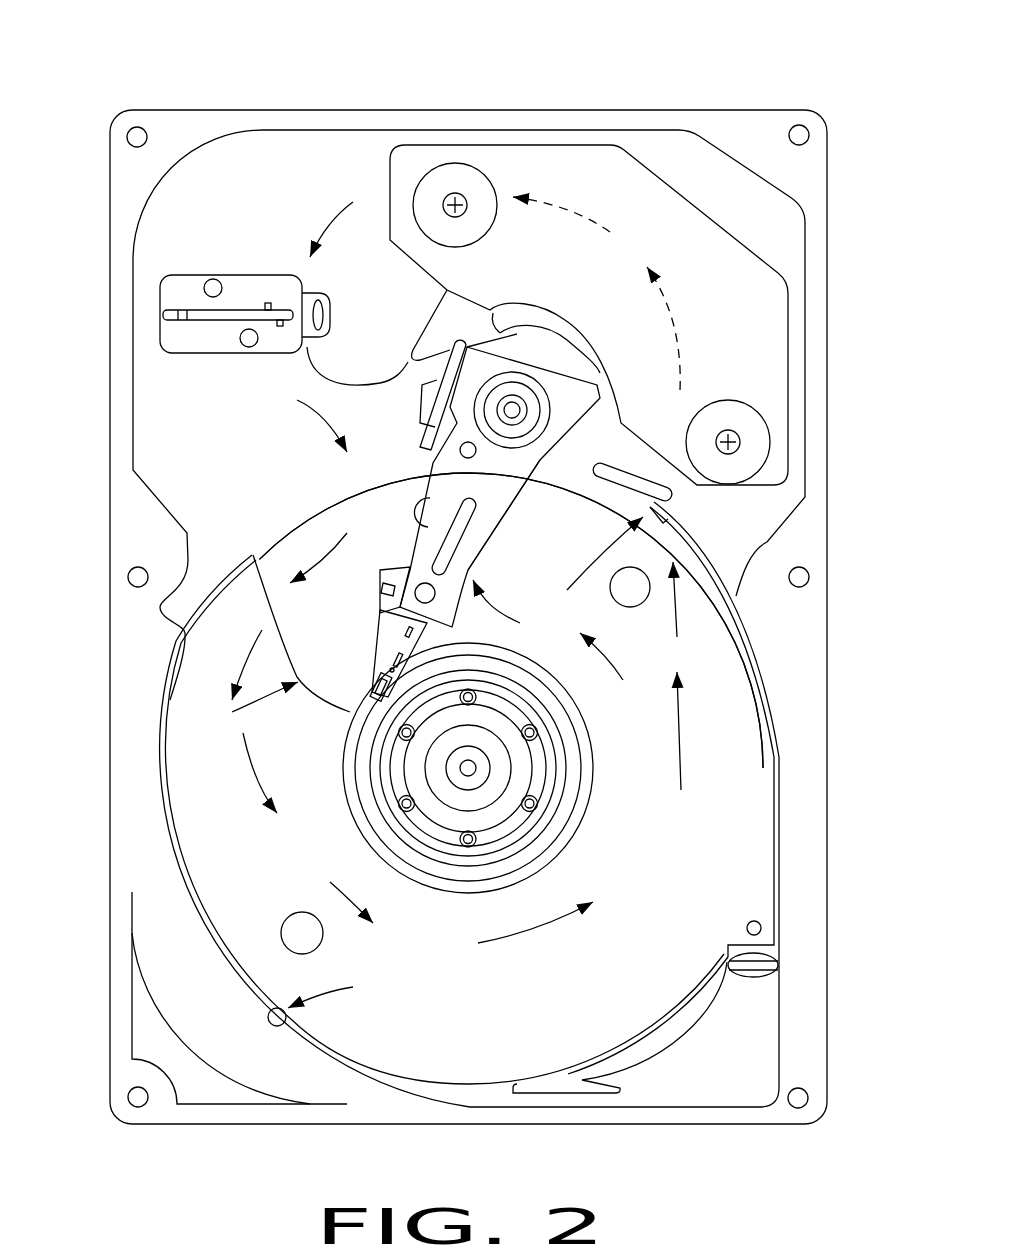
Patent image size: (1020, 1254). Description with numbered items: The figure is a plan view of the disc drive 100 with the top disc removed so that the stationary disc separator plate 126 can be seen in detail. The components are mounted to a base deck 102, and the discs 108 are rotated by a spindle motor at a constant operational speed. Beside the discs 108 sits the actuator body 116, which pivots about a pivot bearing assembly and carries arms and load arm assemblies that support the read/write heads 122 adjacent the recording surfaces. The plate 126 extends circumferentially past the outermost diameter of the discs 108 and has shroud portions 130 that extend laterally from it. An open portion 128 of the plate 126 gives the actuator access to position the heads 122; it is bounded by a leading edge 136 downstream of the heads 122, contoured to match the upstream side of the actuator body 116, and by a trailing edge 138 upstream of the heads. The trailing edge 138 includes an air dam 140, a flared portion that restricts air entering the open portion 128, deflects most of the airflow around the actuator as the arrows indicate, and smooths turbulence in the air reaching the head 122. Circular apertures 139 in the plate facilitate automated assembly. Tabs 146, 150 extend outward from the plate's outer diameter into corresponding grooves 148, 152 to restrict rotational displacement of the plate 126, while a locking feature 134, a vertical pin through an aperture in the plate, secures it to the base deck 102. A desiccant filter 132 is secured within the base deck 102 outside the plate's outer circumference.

The disc drive 100 is at (225, 78).
The base deck 102 is at (130, 185).
The discs 108 is at (360, 513).
The actuator body 116 is at (483, 477).
The read/write heads 122 is at (372, 668).
The stationary disc separator plate 126 is at (197, 768).
The open portion 128 is at (328, 502).
The shroud portions 130 is at (228, 565).
The desiccant filter 132 is at (770, 990).
The locking feature 134 is at (761, 925).
The leading edge 136 is at (243, 704).
The trailing edge 138 is at (516, 606).
The circular apertures 139 is at (302, 912).
The air dam 140 is at (492, 543).
The tab 146 is at (567, 590).
The groove 148 is at (650, 505).
The tab 150 is at (353, 987).
The groove 152 is at (270, 1022).